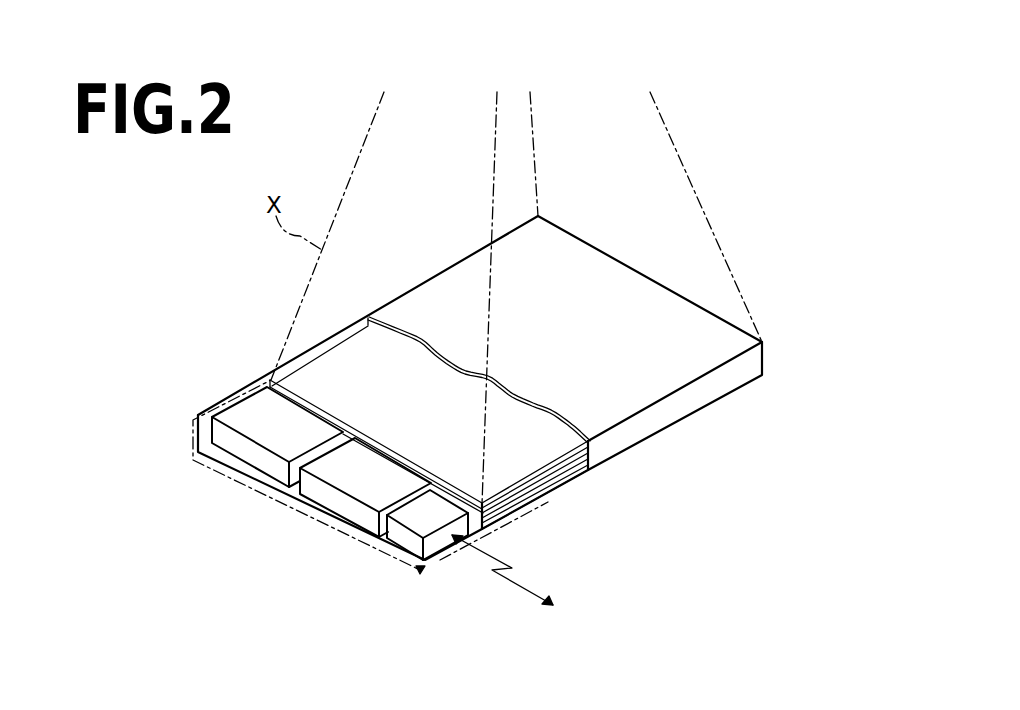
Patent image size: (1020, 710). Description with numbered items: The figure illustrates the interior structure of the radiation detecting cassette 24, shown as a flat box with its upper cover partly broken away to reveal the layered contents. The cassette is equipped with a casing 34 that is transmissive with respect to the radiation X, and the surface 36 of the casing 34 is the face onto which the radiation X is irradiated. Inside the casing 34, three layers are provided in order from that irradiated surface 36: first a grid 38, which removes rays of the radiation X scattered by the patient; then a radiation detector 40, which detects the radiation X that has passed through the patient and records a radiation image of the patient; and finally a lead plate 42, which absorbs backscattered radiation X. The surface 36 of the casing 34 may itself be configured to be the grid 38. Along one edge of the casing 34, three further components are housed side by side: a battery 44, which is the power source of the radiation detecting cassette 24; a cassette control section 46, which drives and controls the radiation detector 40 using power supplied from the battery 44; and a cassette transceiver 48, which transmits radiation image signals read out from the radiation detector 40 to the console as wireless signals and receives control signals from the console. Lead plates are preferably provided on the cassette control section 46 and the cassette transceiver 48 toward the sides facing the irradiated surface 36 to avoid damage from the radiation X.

The radiation detecting cassette 24 is at (428, 268).
The casing 34 is at (652, 423).
The surface of the casing 36 is at (638, 291).
The grid 38 is at (524, 487).
The radiation detector 40 is at (507, 507).
The lead plate 42 is at (505, 518).
The battery 44 is at (247, 450).
The cassette control section 46 is at (340, 505).
The cassette transceiver 48 is at (403, 542).